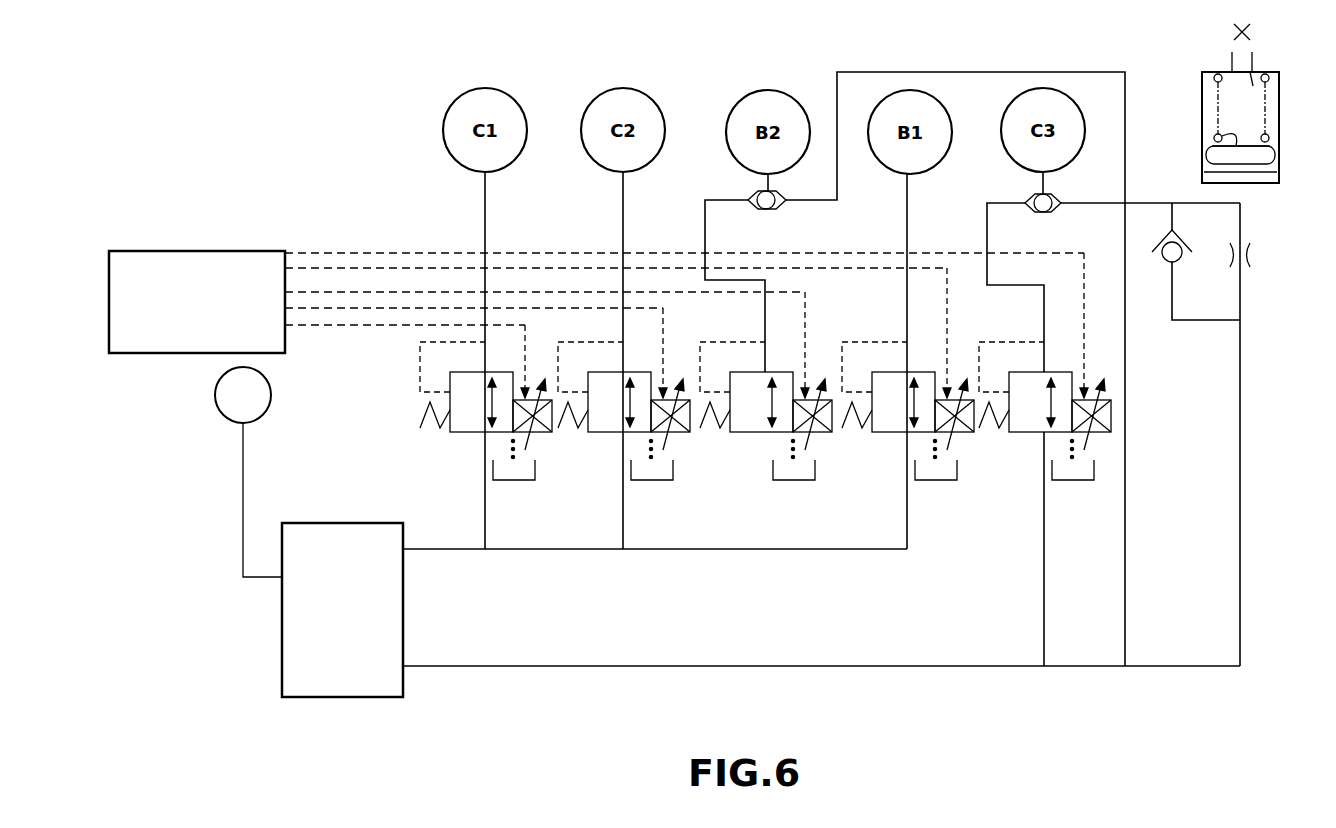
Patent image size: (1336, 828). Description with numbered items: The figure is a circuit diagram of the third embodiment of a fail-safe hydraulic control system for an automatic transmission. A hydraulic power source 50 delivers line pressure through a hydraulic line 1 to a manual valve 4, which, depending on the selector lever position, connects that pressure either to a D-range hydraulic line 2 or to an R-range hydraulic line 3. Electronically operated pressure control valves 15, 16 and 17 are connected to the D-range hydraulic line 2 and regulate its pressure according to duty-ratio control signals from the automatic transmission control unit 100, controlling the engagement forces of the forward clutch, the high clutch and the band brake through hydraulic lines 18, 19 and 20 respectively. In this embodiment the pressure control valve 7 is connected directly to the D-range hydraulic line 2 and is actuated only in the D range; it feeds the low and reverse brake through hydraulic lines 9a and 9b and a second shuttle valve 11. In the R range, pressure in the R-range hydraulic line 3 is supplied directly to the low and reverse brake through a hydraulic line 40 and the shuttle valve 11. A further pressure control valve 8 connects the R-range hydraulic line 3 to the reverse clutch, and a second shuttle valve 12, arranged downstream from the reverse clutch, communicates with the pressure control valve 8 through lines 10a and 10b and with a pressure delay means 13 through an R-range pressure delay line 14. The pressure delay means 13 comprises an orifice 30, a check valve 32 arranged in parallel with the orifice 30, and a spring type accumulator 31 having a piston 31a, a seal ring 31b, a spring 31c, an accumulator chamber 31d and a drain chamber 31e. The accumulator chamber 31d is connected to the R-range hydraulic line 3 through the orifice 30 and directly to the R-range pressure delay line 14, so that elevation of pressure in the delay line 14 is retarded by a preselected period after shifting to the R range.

The automatic transmission control unit 100 is at (203, 250).
The hydraulic power source 50 is at (271, 397).
The hydraulic line 1 is at (243, 470).
The manual valve 4 is at (282, 630).
The D-range hydraulic line 2 is at (535, 549).
The R-range hydraulic line 3 is at (560, 666).
The hydraulic line 18 is at (485, 206).
The hydraulic line 19 is at (623, 206).
The hydraulic line 20 is at (907, 226).
The hydraulic line 9a is at (705, 200).
The hydraulic line 9b is at (758, 185).
The second shuttle valve 11 is at (781, 203).
The hydraulic line 10a is at (987, 203).
The line 10b is at (1036, 185).
The second shuttle valve 12 is at (1060, 203).
The R-range pressure delay line 14 is at (1078, 203).
The hydraulic line 40 is at (1027, 72).
The pressure control valve 15 is at (461, 437).
The pressure control valve 16 is at (599, 437).
The pressure control valve 7 is at (741, 437).
The pressure control valve 17 is at (883, 437).
The pressure control valve 8 is at (1020, 437).
The pressure delay means 13 is at (1253, 190).
The orifice 30 is at (1248, 270).
The check valve 32 is at (1166, 262).
The spring type accumulator 31 is at (1203, 80).
The piston 31a is at (1215, 122).
The seal ring 31b is at (1204, 153).
The spring 31c is at (1218, 98).
The accumulator chamber 31d is at (1204, 172).
The drain chamber 31e is at (1255, 75).